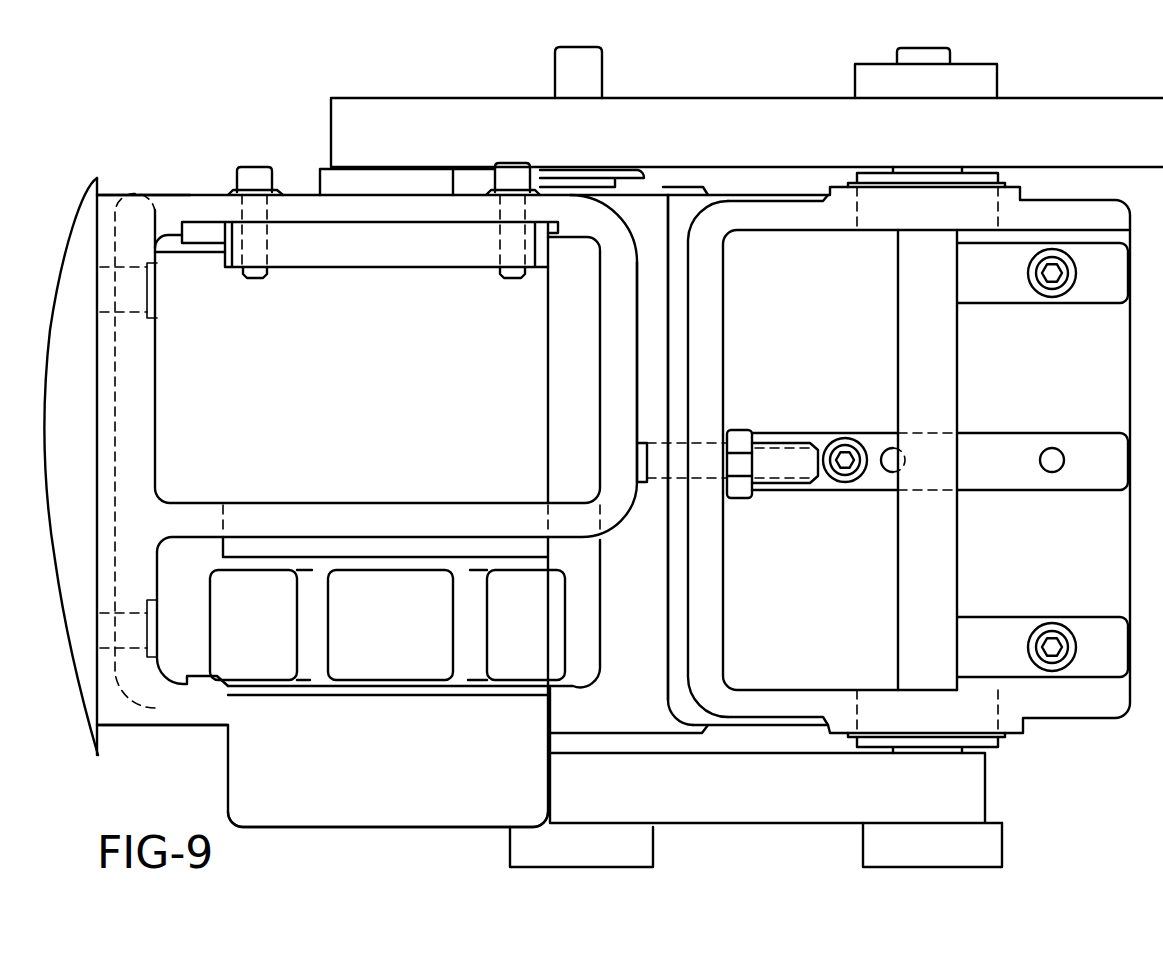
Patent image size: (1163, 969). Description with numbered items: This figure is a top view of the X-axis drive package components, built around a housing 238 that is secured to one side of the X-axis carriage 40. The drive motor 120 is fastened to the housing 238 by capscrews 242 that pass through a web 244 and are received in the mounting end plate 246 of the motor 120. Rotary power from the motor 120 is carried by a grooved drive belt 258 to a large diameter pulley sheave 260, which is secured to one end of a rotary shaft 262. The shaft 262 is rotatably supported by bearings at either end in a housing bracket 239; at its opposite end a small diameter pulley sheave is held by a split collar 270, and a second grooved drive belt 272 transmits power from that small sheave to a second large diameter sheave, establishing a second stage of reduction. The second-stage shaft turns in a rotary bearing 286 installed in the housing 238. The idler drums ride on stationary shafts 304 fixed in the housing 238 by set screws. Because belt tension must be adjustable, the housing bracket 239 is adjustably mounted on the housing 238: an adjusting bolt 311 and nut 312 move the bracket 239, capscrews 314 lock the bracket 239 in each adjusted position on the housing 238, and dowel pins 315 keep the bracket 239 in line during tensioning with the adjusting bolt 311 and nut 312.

The X-axis carriage 40 is at (77, 210).
The drive motor 120 is at (380, 831).
The housing 238 is at (158, 727).
The housing bracket 239 is at (690, 235).
The capscrews 242 is at (250, 173).
The web 244 is at (190, 197).
The mounting end plate 246 is at (346, 258).
The grooved drive belt 258 is at (750, 113).
The large diameter pulley sheave 260 is at (1045, 101).
The rotary shaft 262 is at (892, 57).
The split collar 270 is at (1050, 885).
The second grooved drive belt 272 is at (699, 813).
The rotary bearing 286 is at (322, 180).
The stationary shaft 304 is at (560, 80).
The adjusting bolt 311 is at (770, 441).
The nut 312 is at (737, 429).
The capscrews 314 is at (1066, 295).
The dowel pins 315 is at (1053, 446).